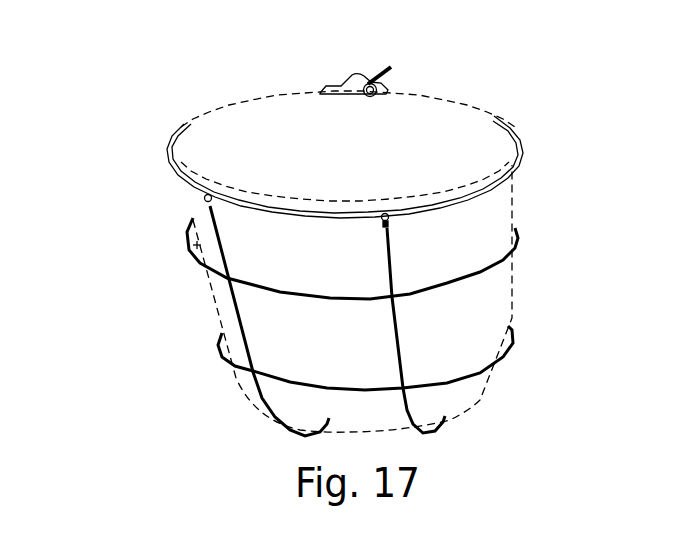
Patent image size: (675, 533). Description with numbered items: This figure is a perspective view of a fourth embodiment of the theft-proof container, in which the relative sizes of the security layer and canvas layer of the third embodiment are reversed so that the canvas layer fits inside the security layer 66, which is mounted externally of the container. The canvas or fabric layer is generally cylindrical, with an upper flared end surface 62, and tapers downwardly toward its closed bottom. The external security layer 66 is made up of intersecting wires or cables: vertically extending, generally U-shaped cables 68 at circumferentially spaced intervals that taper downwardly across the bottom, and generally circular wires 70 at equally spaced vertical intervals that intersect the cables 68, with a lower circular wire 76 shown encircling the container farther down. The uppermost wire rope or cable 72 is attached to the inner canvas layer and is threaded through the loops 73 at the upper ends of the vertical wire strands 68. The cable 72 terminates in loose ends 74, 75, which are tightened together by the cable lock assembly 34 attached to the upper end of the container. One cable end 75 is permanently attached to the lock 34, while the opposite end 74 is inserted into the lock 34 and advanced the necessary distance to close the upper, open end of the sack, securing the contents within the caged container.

The upper flared end surface 62 is at (215, 103).
The uppermost wire rope or cable 72 is at (166, 150).
The locking assembly 34 is at (340, 78).
The loose cable end 74 is at (381, 64).
The loose cable end 75 is at (388, 88).
The upper looped ends 73 is at (580, 300).
The vertically extending U-shaped cables 68 is at (578, 426).
The generally circular wires 70 is at (513, 262).
The lower band 76 is at (227, 278).
The security layer 66 is at (187, 240).